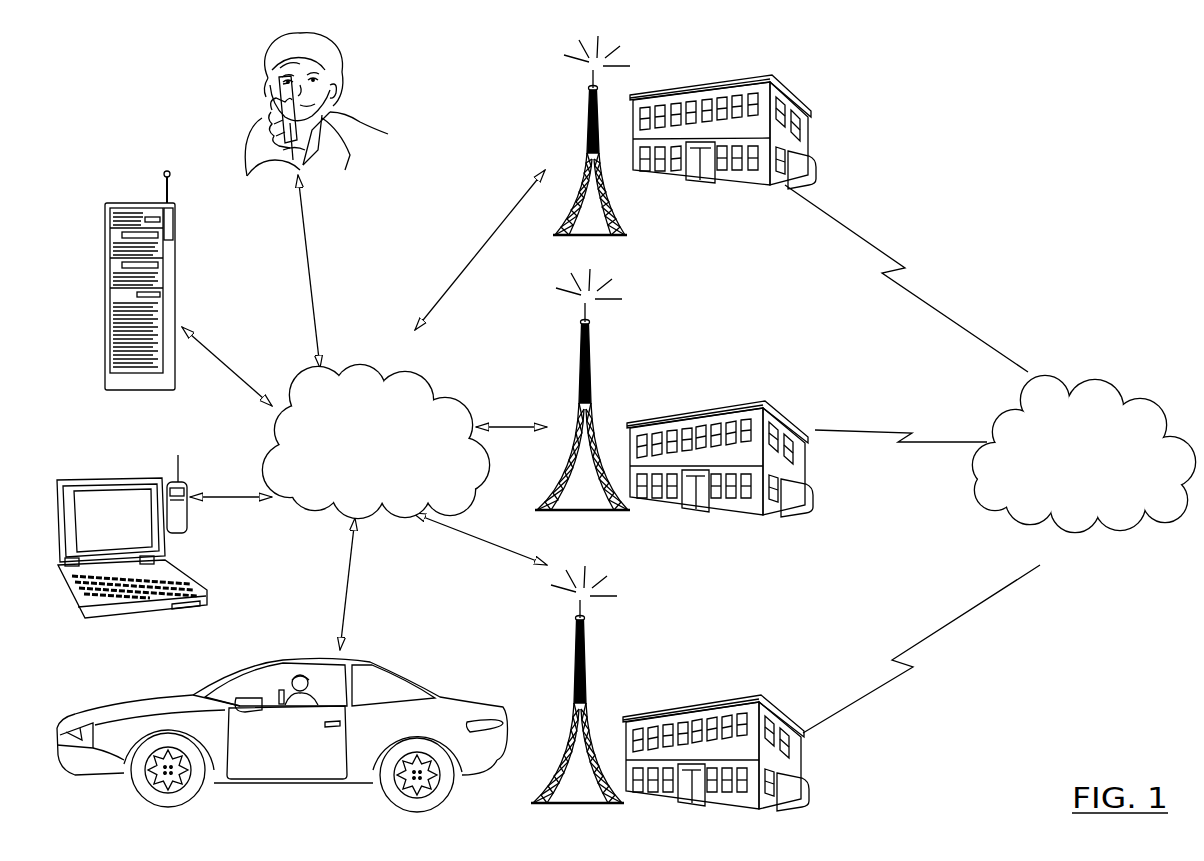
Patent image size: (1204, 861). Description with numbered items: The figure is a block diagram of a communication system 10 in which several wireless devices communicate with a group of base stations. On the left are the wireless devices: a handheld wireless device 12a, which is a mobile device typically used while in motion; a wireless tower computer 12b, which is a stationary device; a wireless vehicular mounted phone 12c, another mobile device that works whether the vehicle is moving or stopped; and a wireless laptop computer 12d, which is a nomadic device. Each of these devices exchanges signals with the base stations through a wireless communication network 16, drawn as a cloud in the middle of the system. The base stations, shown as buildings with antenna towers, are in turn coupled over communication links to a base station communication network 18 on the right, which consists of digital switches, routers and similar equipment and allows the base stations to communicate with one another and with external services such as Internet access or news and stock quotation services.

The communication system 10 is at (1027, 170).
The handheld wireless device 12a is at (270, 100).
The wireless tower computer 12b is at (122, 202).
The wireless vehicular mounted phone 12c is at (263, 683).
The wireless laptop computer 12d is at (178, 522).
The wireless communication network 16 is at (362, 368).
The base station communication network 18 is at (1075, 380).